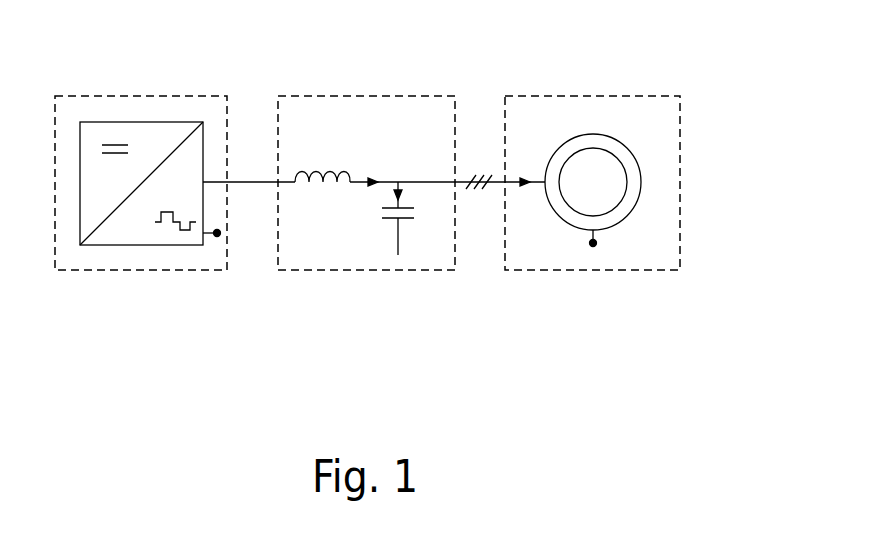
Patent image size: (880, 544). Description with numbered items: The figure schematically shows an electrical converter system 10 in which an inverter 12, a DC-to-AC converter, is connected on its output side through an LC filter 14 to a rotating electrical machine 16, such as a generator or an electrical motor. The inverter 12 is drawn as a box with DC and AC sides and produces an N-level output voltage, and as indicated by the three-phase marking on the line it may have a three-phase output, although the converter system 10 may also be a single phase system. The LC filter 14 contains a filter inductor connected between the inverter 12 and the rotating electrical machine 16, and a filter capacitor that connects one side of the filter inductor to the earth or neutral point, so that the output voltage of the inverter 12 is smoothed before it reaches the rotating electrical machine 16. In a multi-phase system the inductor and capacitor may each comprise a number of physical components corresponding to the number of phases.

The electrical converter system 10 is at (693, 72).
The inverter 12 is at (97, 270).
The LC filter 14 is at (387, 270).
The rotating electrical machine 16 is at (598, 270).